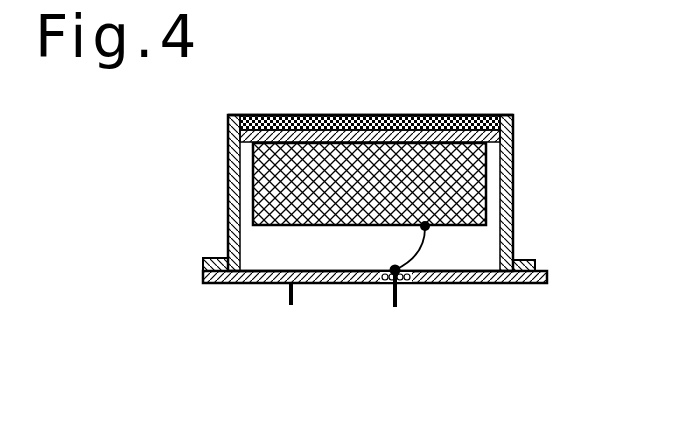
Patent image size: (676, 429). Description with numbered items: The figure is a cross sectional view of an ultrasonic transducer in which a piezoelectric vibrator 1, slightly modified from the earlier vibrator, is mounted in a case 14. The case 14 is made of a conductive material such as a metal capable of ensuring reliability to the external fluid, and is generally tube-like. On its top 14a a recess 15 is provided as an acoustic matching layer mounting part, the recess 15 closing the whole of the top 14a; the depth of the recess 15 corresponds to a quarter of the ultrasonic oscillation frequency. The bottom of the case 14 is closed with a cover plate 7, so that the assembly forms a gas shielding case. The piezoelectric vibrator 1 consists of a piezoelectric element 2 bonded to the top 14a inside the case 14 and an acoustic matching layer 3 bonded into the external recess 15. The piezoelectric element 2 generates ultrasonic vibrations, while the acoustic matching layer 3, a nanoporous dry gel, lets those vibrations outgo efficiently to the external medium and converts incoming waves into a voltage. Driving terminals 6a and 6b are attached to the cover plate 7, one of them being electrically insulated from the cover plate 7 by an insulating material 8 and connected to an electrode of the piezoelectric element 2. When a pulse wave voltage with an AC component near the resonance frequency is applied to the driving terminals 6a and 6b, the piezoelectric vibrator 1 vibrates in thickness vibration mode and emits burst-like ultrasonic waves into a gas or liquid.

The piezoelectric vibrator 1 is at (448, 54).
The piezoelectric element 2 is at (487, 207).
The acoustic matching layer 3 is at (385, 115).
The driving terminal 6a is at (299, 305).
The driving terminal 6b is at (397, 307).
The cover plate 7 is at (547, 282).
The insulating material 8 is at (398, 284).
The case 14 is at (513, 167).
The top 14a is at (442, 115).
The recess 15 is at (513, 130).